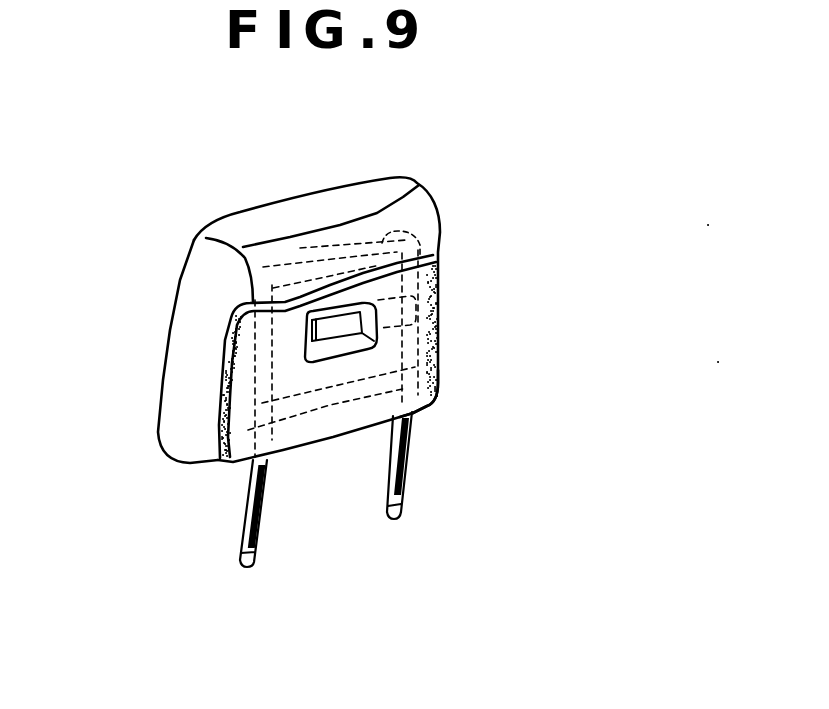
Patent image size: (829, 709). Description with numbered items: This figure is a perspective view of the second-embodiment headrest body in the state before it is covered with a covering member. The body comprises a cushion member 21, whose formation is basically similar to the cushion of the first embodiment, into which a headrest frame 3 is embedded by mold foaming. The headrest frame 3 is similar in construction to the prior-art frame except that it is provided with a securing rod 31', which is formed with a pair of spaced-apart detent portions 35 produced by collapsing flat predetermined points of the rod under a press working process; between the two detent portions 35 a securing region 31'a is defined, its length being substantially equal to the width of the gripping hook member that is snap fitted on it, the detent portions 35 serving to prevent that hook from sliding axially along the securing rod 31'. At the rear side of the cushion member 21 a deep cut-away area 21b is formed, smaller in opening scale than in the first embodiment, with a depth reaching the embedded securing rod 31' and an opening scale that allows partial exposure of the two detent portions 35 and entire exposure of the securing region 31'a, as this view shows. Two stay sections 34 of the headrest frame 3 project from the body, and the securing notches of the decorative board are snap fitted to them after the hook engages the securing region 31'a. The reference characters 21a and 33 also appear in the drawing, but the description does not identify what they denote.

The cushion member 21 is at (192, 251).
The front face of headrest 21a is at (427, 315).
The deep cut-away area 21b is at (368, 345).
The securing rod 31' is at (343, 409).
The securing region 31'a is at (298, 244).
The headrest frame 3 is at (433, 203).
The detent portions 35 is at (440, 285).
The lower portion of headrest 33 is at (433, 405).
The stay sections 34 is at (400, 493).